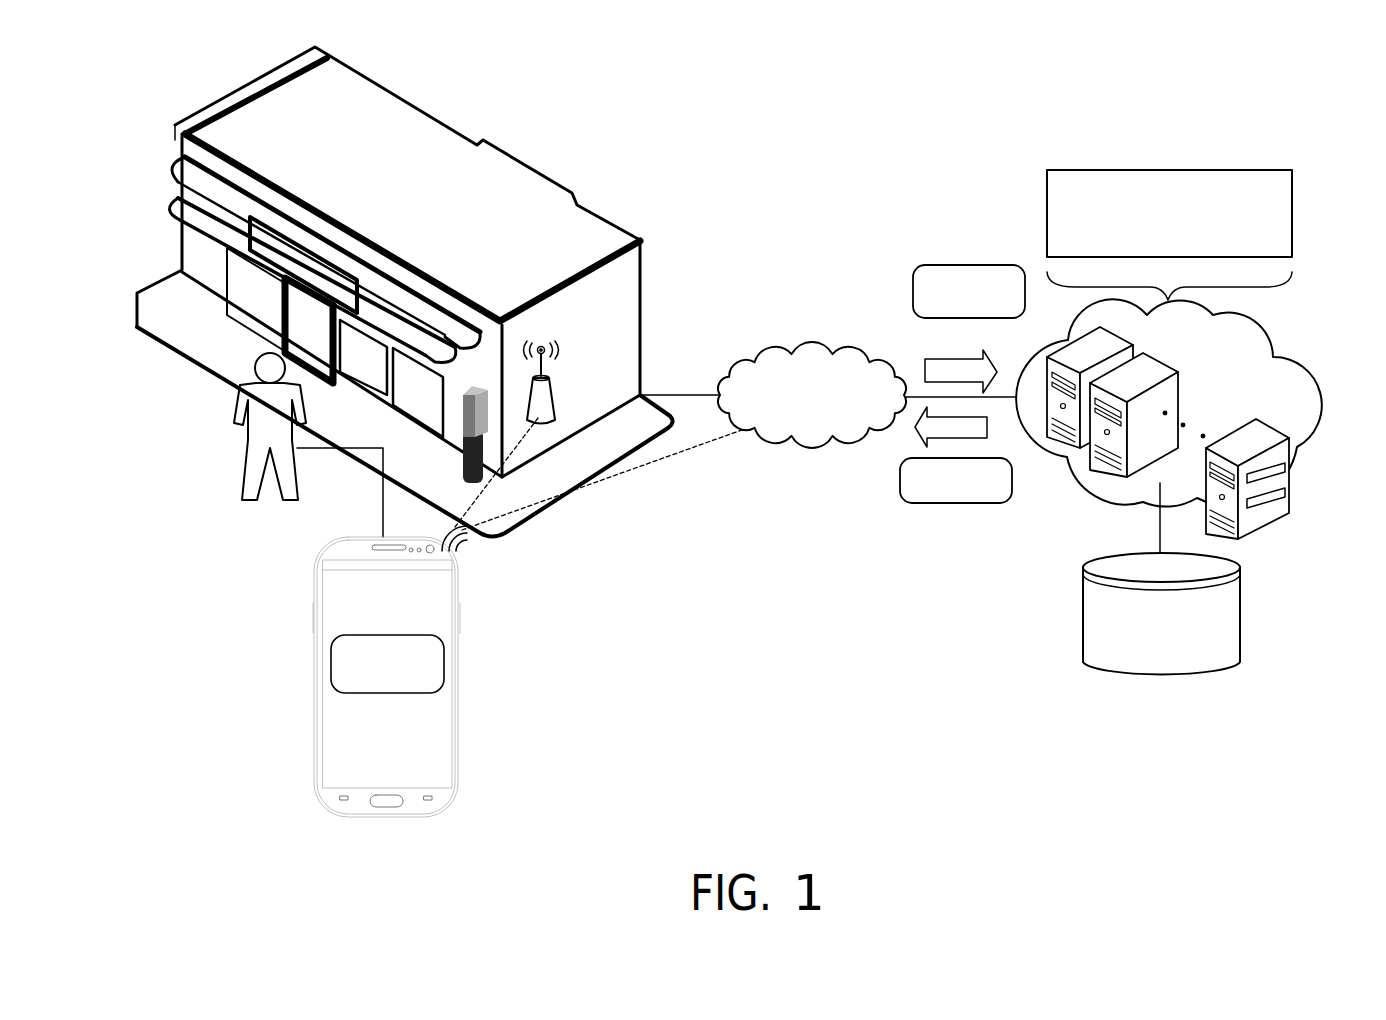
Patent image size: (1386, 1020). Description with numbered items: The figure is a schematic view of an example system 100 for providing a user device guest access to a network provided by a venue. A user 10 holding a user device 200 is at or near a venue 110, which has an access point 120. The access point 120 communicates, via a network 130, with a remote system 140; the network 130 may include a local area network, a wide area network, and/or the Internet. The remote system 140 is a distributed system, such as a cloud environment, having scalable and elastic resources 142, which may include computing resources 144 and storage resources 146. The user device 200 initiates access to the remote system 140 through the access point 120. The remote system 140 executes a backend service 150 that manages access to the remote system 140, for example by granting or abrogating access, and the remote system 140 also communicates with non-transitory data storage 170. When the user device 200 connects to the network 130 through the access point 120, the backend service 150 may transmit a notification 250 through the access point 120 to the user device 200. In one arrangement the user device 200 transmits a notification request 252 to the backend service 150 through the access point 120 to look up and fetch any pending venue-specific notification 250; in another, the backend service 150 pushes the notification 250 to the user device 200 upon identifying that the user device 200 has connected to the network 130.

The system 100 is at (925, 82).
The venue 110 is at (437, 120).
The user 10 is at (238, 401).
The access point 120 is at (558, 412).
The user device 200 is at (462, 593).
The network 130 is at (816, 352).
The notification request 252 is at (971, 265).
The notification 250 is at (957, 504).
The backend service 150 is at (1165, 170).
The remote system 140 is at (1188, 426).
The resources 142 is at (1283, 464).
The computing resources 144 is at (1286, 463).
The storage resources 146 is at (1286, 489).
The data storage 170 is at (1240, 628).